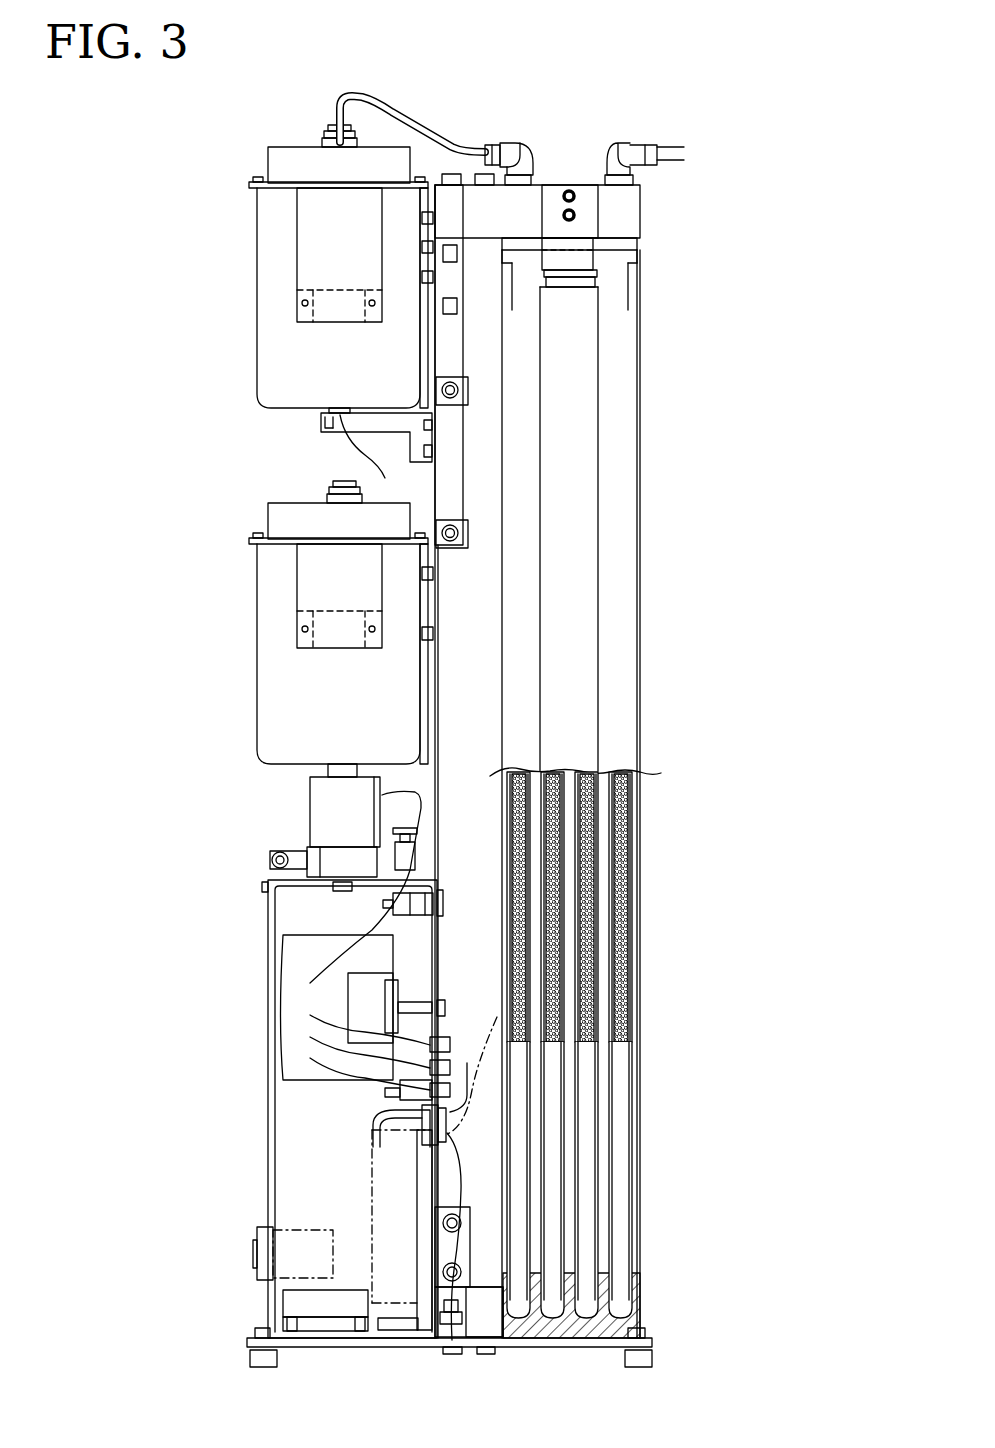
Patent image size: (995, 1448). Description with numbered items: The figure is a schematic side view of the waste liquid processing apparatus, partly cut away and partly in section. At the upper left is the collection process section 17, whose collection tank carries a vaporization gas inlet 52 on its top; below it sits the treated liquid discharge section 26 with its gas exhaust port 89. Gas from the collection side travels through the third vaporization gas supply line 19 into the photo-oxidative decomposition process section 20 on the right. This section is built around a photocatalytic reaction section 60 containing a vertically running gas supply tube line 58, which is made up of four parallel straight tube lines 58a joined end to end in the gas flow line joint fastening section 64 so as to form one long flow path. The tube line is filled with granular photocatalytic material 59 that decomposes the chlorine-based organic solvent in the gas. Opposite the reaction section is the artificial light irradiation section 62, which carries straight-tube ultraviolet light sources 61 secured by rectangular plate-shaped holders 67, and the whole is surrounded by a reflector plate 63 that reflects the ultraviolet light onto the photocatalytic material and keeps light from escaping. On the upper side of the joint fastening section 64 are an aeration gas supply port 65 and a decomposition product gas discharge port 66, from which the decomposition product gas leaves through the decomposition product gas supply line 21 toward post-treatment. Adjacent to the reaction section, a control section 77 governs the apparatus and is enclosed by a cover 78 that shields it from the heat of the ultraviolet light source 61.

The collection process section 17 is at (255, 240).
The third vaporization gas supply line 19 is at (440, 141).
The photo-oxidative decomposition process section 20 is at (593, 708).
The decomposition product gas supply line 21 is at (668, 145).
The treated liquid discharge section 26 is at (255, 666).
The vaporization gas inlet 52 is at (322, 127).
The gas supply tube line 58 is at (632, 1125).
The straight tube line 58a is at (632, 1060).
The granular photocatalytic material 59 is at (622, 826).
The photocatalytic reaction section 60 is at (632, 870).
The ultraviolet light source 61 is at (588, 485).
The artificial light irradiation section 62 is at (600, 566).
The reflector plate 63 is at (628, 343).
The gas flow line joint fastening section 64 is at (640, 233).
The aeration gas supply port 65 is at (520, 153).
The decomposition product gas discharge port 66 is at (617, 153).
The holder 67 is at (600, 208).
The control section 77 is at (300, 935).
The cover 78 is at (275, 1042).
The gas exhaust port 89 is at (328, 483).